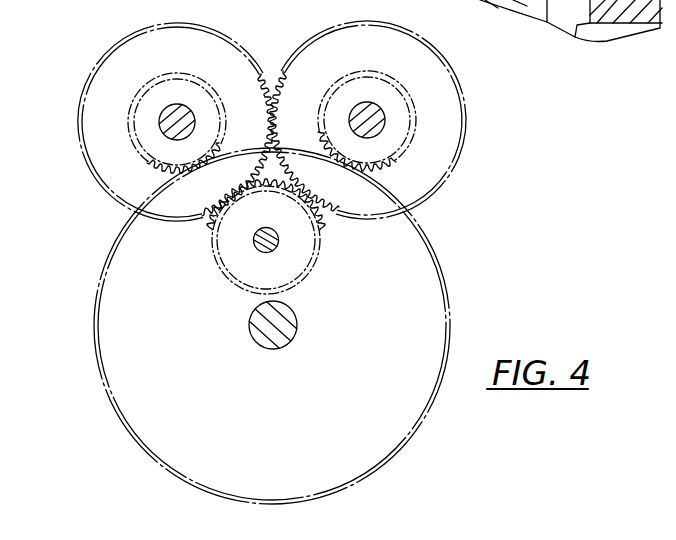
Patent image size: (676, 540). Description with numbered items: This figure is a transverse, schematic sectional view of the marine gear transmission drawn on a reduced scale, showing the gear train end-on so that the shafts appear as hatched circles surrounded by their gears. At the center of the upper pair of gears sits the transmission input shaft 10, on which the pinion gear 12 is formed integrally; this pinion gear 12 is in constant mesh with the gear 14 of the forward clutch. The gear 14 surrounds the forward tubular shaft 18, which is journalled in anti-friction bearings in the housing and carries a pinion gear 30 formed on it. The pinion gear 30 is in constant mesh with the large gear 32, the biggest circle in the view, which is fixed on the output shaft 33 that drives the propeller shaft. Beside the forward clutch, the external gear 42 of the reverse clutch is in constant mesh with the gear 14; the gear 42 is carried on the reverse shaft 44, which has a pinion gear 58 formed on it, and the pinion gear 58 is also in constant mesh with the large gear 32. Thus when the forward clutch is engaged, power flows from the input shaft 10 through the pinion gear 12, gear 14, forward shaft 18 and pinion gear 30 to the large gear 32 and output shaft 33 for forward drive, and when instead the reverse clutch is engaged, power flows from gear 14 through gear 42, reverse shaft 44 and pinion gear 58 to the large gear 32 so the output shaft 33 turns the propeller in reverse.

The transmission input shaft 10 is at (257, 250).
The pinion gear 12 is at (208, 248).
The gear 14 is at (80, 90).
The forward tubular shaft 18 is at (160, 117).
The pinion gear 30 is at (130, 145).
The large gear 32 is at (449, 303).
The output shaft 33 is at (297, 329).
The external gear 42 is at (458, 97).
The reverse shaft 44 is at (386, 111).
The pinion gear 58 is at (417, 118).